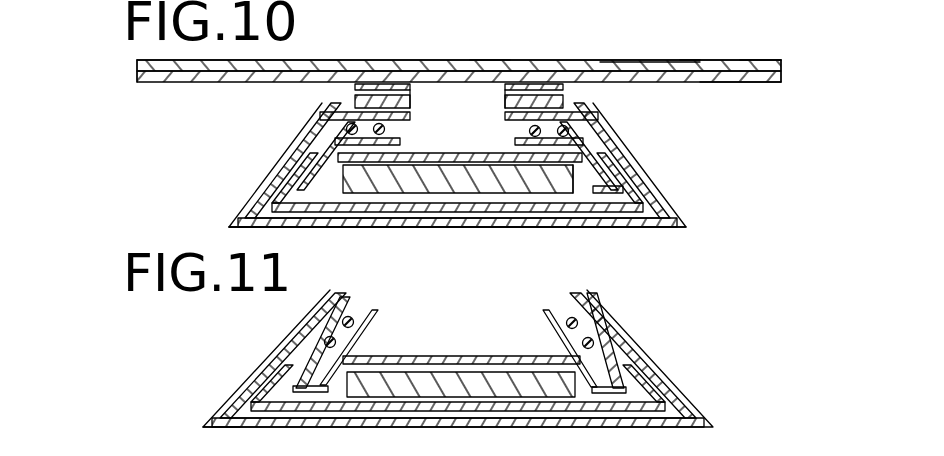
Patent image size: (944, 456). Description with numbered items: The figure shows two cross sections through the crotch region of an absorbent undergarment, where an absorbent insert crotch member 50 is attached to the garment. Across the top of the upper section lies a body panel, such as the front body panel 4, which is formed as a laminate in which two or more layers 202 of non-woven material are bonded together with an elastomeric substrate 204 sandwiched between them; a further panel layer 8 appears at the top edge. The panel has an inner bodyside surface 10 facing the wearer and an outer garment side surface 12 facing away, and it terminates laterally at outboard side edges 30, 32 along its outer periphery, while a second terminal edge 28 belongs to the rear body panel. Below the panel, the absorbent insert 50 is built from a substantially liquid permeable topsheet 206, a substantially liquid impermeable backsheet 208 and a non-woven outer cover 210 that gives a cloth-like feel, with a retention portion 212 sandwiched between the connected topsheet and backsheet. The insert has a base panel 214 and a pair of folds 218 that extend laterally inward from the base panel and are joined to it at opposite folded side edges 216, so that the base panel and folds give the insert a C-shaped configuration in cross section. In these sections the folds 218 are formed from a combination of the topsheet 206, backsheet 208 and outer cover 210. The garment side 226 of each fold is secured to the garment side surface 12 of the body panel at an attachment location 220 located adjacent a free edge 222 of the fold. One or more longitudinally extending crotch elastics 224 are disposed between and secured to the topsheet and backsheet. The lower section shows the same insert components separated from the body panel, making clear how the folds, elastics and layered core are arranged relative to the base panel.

In FIG. 10, the front body panel 4 is at (772, 62).
In FIG. 10, the panel layer 8 is at (690, 30).
In FIG. 10, the bodyside surface 10 is at (655, 62).
In FIG. 10, the garment side surface 12 is at (744, 83).
In FIG. 10, the second terminal edge 28 is at (479, 0).
In FIG. 10, the outboard side edge 30 is at (781, 72).
In FIG. 10, the outboard side edge 32 is at (137, 71).
In FIG. 10, the absorbent insert crotch member 50 is at (250, 226).
In FIG. 11, the absorbent insert crotch member 50 is at (208, 398).
In FIG. 10, the layers 202 is at (700, 62).
In FIG. 10, the elastomeric substrate 204 is at (594, 62).
In FIG. 10, the topsheet 206 is at (608, 192).
In FIG. 11, the topsheet 206 is at (566, 324).
In FIG. 10, the backsheet 208 is at (650, 213).
In FIG. 11, the backsheet 208 is at (700, 390).
In FIG. 10, the outer cover 210 is at (665, 200).
In FIG. 11, the outer cover 210 is at (660, 360).
In FIG. 10, the retention portion 212 is at (453, 187).
In FIG. 11, the retention portion 212 is at (551, 392).
In FIG. 10, the base panel 214 is at (342, 232).
In FIG. 10, the folded side edges 216 is at (228, 222).
In FIG. 11, the folded side edges 216 is at (458, 358).
In FIG. 10, the folds 218 is at (292, 152).
In FIG. 10, the attachment location 220 is at (380, 84).
In FIG. 10, the free edge 222 is at (413, 118).
In FIG. 10, the crotch elastics 224 is at (347, 128).
In FIG. 10, the garment side 226 is at (265, 182).
In FIG. 11, the garment side 226 is at (458, 360).